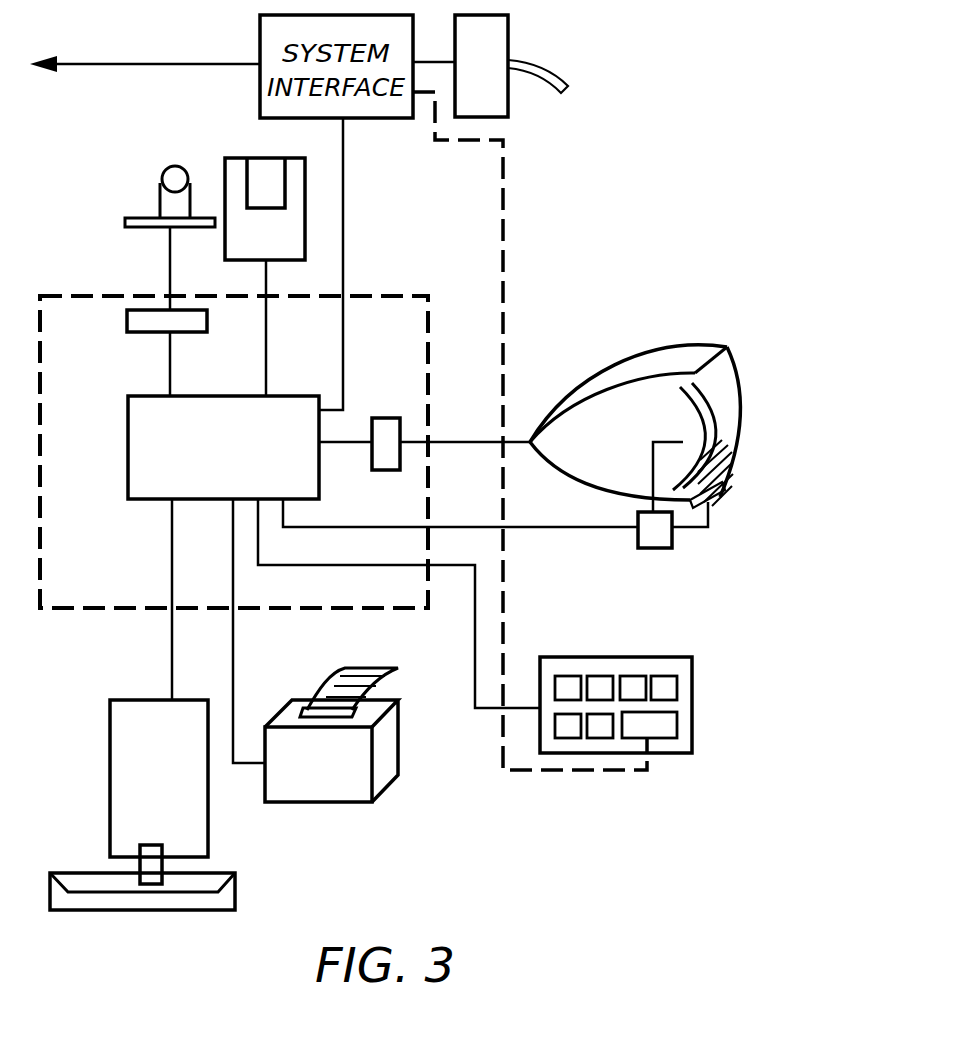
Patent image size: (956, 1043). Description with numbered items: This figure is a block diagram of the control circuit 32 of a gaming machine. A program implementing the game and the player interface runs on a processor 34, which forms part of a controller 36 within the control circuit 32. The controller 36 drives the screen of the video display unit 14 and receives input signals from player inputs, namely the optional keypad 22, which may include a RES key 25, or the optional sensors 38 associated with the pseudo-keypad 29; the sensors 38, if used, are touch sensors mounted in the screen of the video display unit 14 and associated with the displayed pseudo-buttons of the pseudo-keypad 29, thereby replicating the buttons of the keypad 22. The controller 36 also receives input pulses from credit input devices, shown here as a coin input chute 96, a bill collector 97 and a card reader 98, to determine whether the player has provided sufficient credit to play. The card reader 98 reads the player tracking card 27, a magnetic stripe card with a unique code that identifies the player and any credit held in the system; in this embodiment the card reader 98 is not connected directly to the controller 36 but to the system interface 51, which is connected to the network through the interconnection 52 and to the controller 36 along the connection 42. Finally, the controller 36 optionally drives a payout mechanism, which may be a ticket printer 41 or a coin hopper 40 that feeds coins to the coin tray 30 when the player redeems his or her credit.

The video display unit 14 is at (702, 346).
The keypad 22 is at (695, 733).
The RES key 25 is at (680, 722).
The player tracking card 27 is at (565, 82).
The pseudo-keypad 29 is at (740, 457).
The coin tray 30 is at (235, 886).
The control circuit 32 is at (402, 282).
The processor 34 is at (128, 497).
The controller 36 is at (430, 392).
The sensors 38 is at (688, 410).
The coin hopper 40 is at (110, 747).
The ticket printer 41 is at (390, 757).
The communication line 42 is at (508, 617).
The system interface 51 is at (378, 120).
The interconnection 52 is at (221, 64).
The coin input chute 96 is at (160, 193).
The bill collector 97 is at (225, 179).
The card reader 98 is at (508, 36).